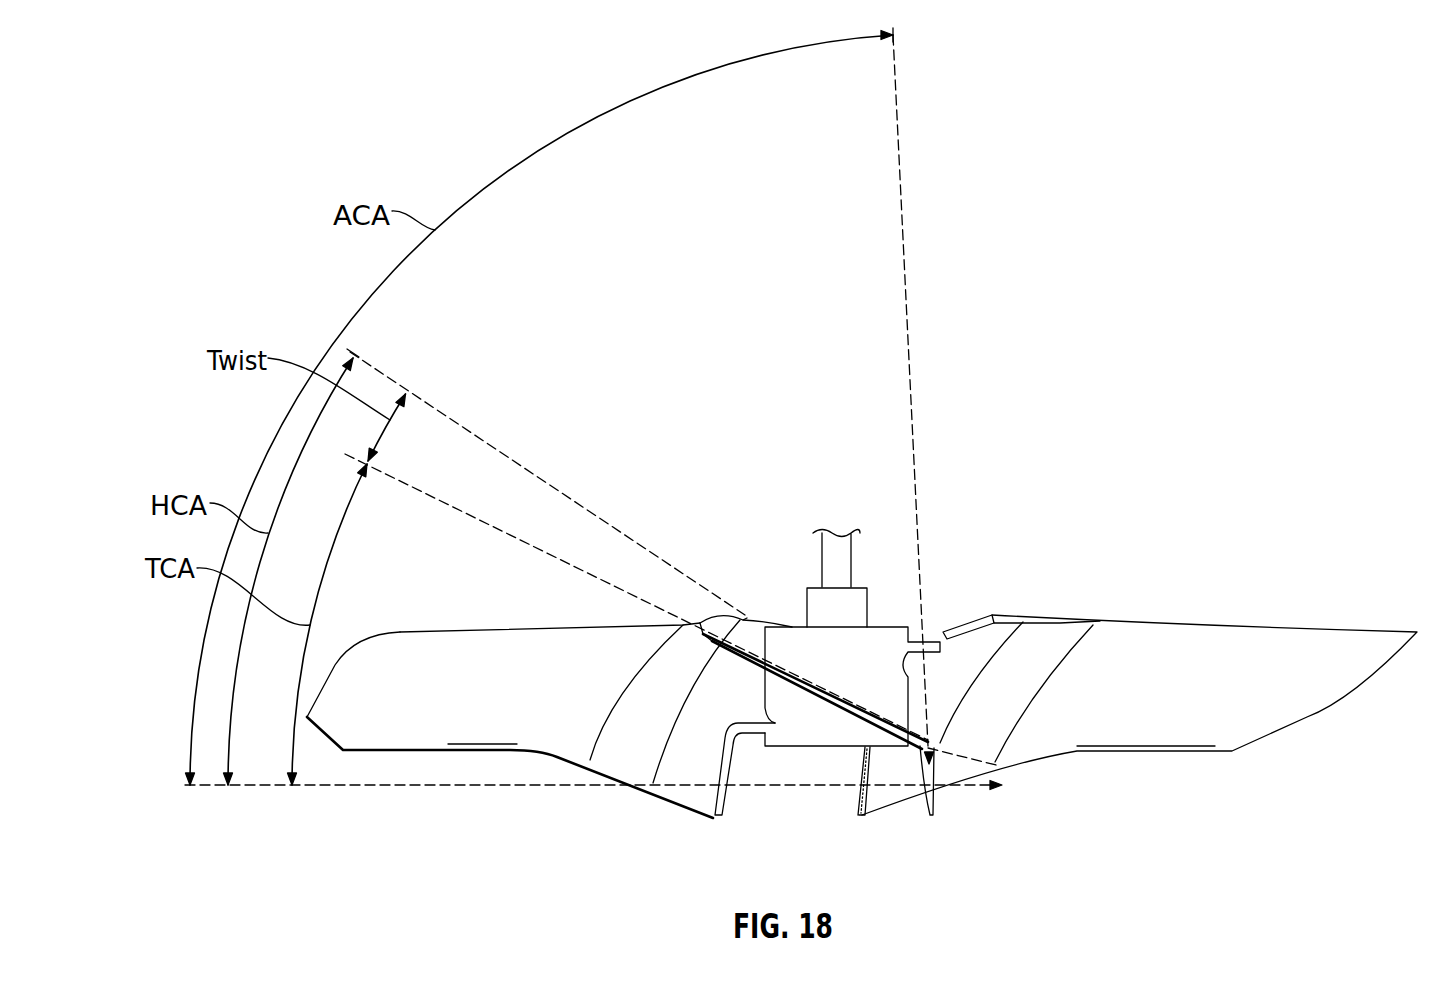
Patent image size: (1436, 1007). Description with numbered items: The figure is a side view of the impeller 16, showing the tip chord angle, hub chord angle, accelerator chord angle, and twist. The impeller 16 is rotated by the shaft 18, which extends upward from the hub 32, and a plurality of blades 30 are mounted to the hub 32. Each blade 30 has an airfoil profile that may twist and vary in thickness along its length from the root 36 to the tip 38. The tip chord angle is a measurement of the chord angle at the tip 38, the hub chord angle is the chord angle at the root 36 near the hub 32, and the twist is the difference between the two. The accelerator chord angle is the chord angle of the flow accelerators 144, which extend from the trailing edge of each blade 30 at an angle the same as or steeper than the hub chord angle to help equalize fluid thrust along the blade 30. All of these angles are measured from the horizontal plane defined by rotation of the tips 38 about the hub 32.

The impeller 16 is at (1047, 484).
The shaft 18 is at (840, 575).
The blade 30 is at (467, 753).
The hub 32 is at (808, 747).
The root 36 is at (743, 622).
The tip 38 is at (400, 632).
The flow accelerator 144 is at (703, 813).